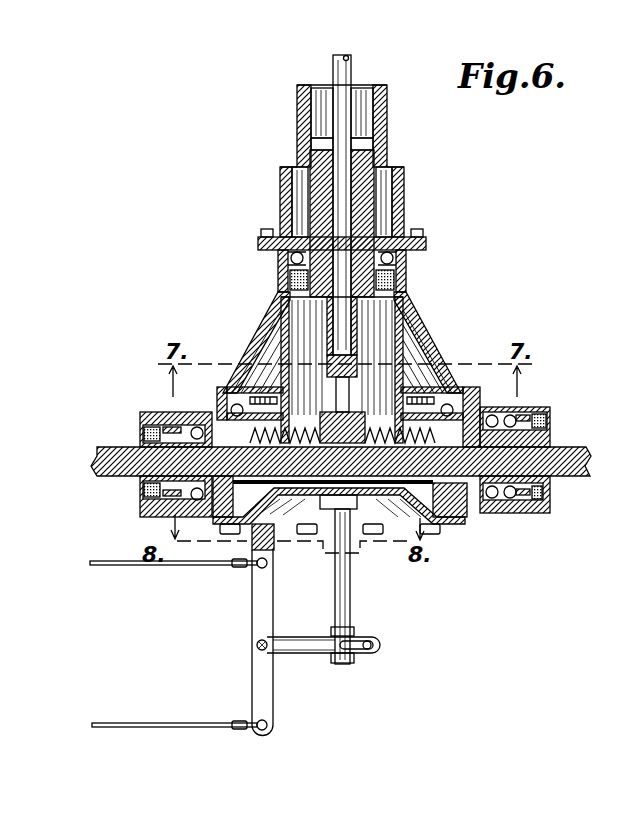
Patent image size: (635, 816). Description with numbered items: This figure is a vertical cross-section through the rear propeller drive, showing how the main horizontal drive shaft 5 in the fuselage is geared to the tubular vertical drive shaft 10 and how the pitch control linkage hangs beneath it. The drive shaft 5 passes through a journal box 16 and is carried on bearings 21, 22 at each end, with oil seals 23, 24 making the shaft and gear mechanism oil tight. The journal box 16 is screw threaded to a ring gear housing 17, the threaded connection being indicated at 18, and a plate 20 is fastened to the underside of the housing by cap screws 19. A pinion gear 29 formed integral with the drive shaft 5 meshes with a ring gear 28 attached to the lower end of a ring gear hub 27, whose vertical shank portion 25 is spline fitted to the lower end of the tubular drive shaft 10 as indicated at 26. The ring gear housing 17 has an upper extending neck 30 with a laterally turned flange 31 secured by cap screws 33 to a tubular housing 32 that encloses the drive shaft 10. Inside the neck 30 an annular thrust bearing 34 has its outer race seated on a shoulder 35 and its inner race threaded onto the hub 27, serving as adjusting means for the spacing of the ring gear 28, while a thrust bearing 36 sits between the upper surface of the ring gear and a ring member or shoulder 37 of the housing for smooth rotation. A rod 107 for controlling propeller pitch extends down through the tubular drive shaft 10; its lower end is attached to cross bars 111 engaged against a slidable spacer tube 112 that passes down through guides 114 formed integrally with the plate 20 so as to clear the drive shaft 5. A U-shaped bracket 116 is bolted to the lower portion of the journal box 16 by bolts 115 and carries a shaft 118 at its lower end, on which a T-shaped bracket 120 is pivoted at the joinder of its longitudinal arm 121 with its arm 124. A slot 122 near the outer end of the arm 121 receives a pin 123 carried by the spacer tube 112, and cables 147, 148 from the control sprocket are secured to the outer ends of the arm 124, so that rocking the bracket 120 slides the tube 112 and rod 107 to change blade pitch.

The rod 107 is at (333, 70).
The tubular vertical drive shaft 10 is at (387, 92).
The vertical shank portion 25 is at (318, 178).
The spline fit 26 is at (372, 172).
The tubular housing 32 is at (283, 190).
The cap screws 33 is at (426, 238).
The laterally turned flange 31 is at (260, 246).
The annular thrust bearing 34 is at (292, 263).
The shoulder 35 is at (396, 271).
The upper extending neck 30 is at (414, 292).
The ring gear hub 27 is at (283, 327).
The ring gear housing 17 is at (412, 327).
The cross bars 111 is at (357, 366).
The slidable spacer tube 112 is at (352, 398).
The thrust bearing 36 is at (227, 390).
The ring gear 28 is at (368, 416).
The guides 114 is at (406, 380).
The ring member or shoulder 37 is at (472, 390).
The bearing 22 is at (183, 412).
The oil seal 24 is at (144, 432).
The bearing 21 is at (515, 410).
The screw threaded connection 18 is at (484, 410).
The main horizontal drive shaft 5 is at (100, 476).
The oil seal 23 is at (552, 496).
The journal box 16 is at (222, 521).
The pinion gear 29 is at (440, 524).
The plate 20 is at (414, 500).
The cap screws 19 is at (458, 526).
The U-shaped bracket 116 is at (275, 550).
The bolts 115 is at (256, 556).
The cable 147 is at (98, 568).
The cable 148 is at (112, 725).
The arm 124 is at (262, 608).
The longitudinal arm 121 is at (305, 648).
The T-shaped bracket 120 is at (296, 654).
The pin 123 is at (373, 642).
The slot 122 is at (372, 653).
The shaft 118 is at (260, 651).